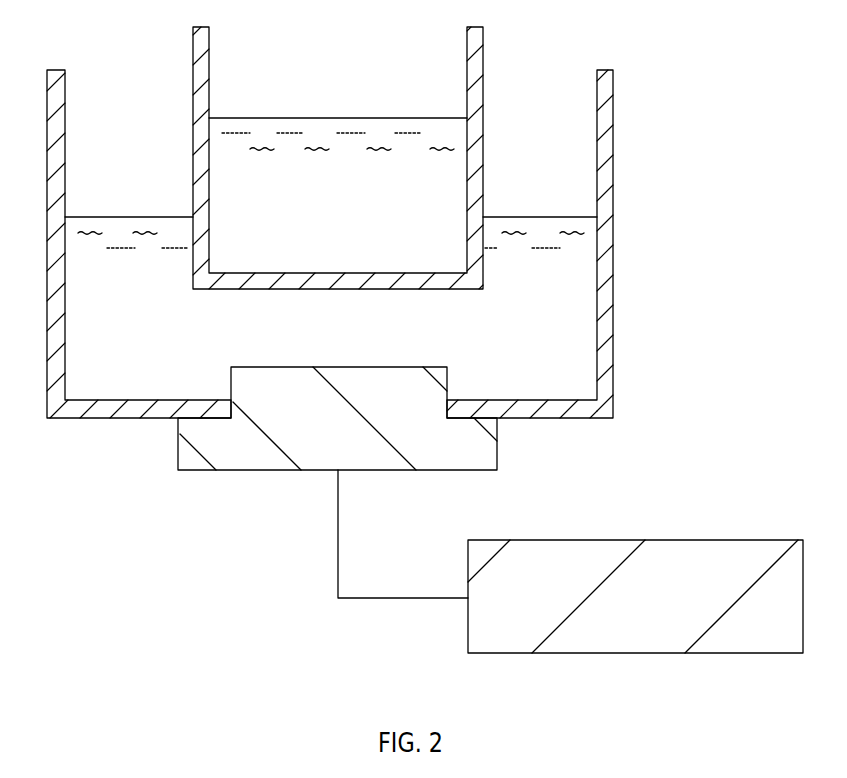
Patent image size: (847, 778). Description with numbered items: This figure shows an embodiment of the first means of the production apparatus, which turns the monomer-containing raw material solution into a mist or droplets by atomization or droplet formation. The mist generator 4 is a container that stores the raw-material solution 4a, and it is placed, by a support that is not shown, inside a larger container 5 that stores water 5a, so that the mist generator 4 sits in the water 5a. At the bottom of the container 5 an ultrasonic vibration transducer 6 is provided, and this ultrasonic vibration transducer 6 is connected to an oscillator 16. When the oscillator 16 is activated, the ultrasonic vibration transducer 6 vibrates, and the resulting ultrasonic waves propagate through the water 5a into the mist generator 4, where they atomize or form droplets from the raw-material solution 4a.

The mist generator 4 is at (483, 48).
The raw-material solution 4a is at (463, 162).
The container 5 is at (613, 316).
The water 5a is at (578, 275).
The ultrasonic vibration transducer 6 is at (235, 453).
The oscillator 16 is at (677, 540).